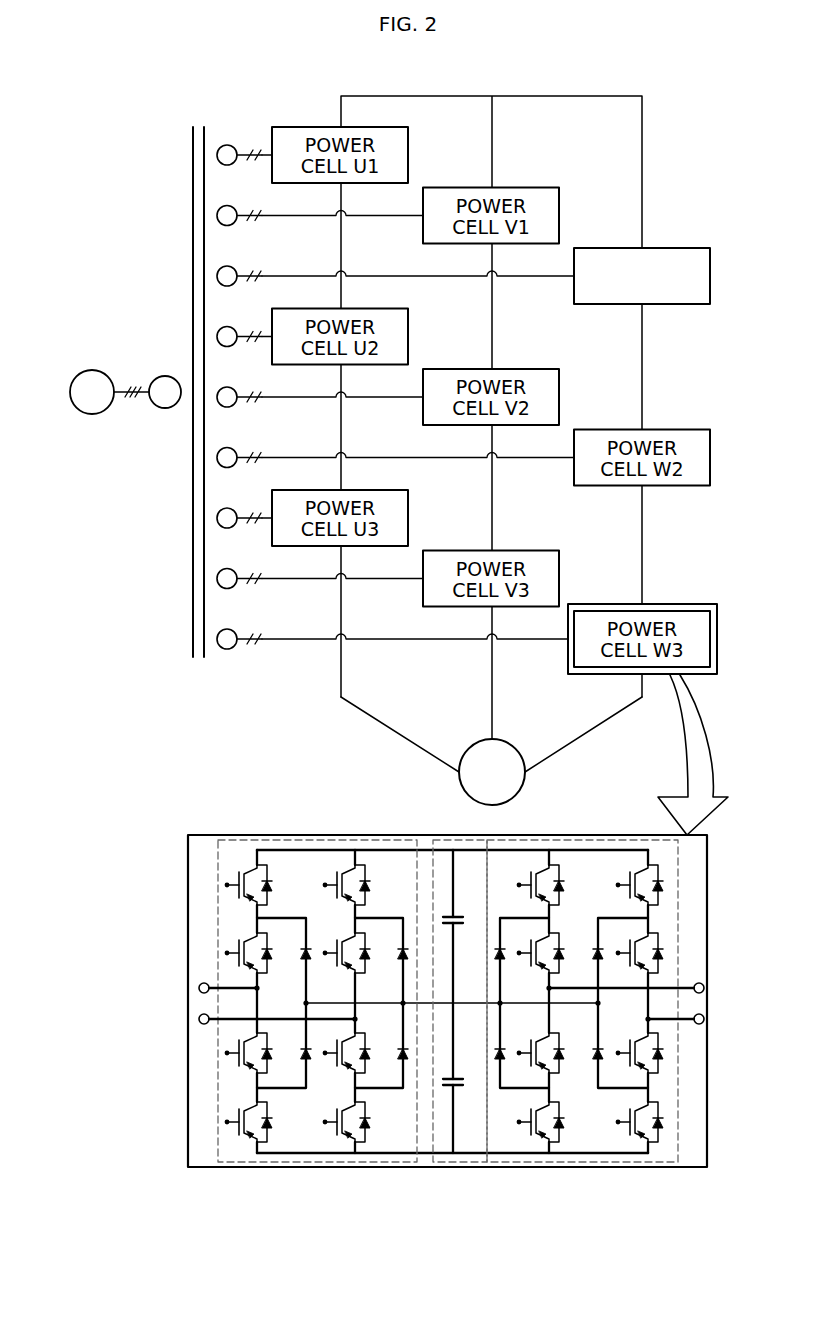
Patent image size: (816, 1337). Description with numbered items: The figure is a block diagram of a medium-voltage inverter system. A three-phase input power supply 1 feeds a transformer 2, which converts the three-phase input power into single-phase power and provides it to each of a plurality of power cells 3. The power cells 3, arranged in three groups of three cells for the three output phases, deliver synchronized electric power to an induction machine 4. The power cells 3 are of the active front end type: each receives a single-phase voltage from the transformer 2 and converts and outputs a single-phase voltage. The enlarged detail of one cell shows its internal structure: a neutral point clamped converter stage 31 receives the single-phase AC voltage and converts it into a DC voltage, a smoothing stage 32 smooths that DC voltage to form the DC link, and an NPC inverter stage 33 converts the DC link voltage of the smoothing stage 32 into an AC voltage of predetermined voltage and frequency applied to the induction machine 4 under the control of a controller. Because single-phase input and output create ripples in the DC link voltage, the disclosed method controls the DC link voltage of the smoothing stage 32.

The three-phase input power supply 1 is at (88, 372).
The transformer 2 is at (193, 180).
The power cell 3 is at (690, 248).
The induction machine 4 is at (525, 787).
The neutral point clamped converter stage 31 is at (218, 912).
The smoothing stage 32 is at (455, 1162).
The NPC inverter stage 33 is at (678, 912).